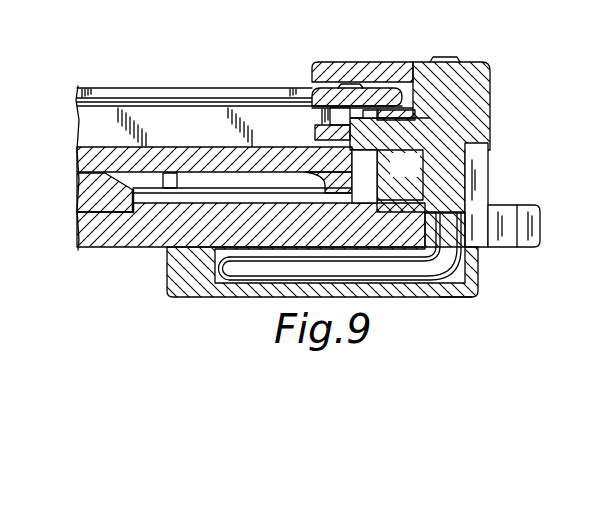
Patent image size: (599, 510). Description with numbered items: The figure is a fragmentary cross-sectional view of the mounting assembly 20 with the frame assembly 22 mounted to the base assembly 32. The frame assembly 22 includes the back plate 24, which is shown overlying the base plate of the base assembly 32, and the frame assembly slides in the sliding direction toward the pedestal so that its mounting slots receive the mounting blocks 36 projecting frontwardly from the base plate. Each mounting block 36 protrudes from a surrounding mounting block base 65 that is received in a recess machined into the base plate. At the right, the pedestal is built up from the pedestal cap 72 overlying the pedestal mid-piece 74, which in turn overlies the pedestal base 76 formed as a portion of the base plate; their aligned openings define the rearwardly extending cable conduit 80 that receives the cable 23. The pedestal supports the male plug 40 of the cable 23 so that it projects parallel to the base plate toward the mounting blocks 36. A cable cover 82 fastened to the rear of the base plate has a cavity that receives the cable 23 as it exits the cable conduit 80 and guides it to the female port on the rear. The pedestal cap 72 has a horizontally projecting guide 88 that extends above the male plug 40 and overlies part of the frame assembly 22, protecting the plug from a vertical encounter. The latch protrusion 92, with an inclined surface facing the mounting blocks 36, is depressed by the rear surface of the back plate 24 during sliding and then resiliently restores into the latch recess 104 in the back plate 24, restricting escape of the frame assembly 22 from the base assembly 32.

The mounting assembly 20 is at (223, 79).
The frame assembly 22 is at (113, 87).
The cable 23 is at (466, 297).
The back plate 24 is at (107, 146).
The base assembly 32 is at (80, 230).
The mounting block 36 is at (83, 184).
The male plug 40 is at (323, 118).
The mounting block base 65 is at (80, 204).
The pedestal cap 72 is at (493, 90).
The pedestal mid-piece 74 is at (492, 176).
The pedestal base 76 is at (490, 228).
The cable conduit 80 is at (462, 258).
The cable cover 82 is at (200, 297).
The guide 88 is at (352, 62).
The latch protrusion 92 is at (377, 168).
The latch recess 104 is at (18, 74).